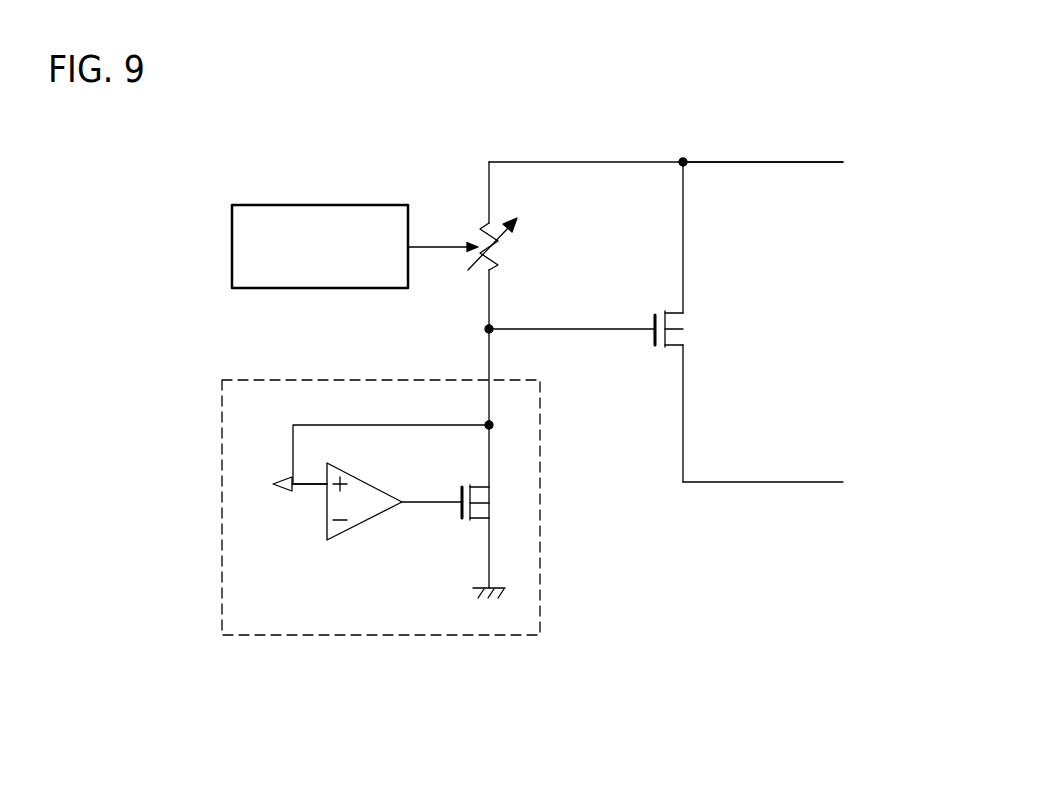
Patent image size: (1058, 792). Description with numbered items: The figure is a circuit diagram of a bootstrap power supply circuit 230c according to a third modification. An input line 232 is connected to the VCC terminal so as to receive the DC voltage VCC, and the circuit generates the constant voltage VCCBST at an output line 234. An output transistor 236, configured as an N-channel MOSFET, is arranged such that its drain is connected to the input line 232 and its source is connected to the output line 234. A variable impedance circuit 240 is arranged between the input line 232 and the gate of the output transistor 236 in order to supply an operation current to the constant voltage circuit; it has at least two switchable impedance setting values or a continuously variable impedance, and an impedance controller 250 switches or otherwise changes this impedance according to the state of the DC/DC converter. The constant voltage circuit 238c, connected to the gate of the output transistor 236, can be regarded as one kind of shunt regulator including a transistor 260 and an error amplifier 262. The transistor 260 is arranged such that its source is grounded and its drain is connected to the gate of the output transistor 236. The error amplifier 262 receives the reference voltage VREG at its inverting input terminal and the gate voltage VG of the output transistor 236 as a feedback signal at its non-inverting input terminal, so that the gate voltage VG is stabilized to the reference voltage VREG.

The impedance controller 250 is at (323, 204).
The variable impedance circuit 240 is at (503, 252).
The input line 232 is at (792, 162).
The output transistor 236 is at (693, 323).
The output line 234 is at (791, 482).
The constant voltage circuit 238c is at (360, 636).
The error amplifier 262 is at (367, 524).
The transistor 260 is at (465, 528).
The bootstrap power supply circuit 230c is at (568, 738).